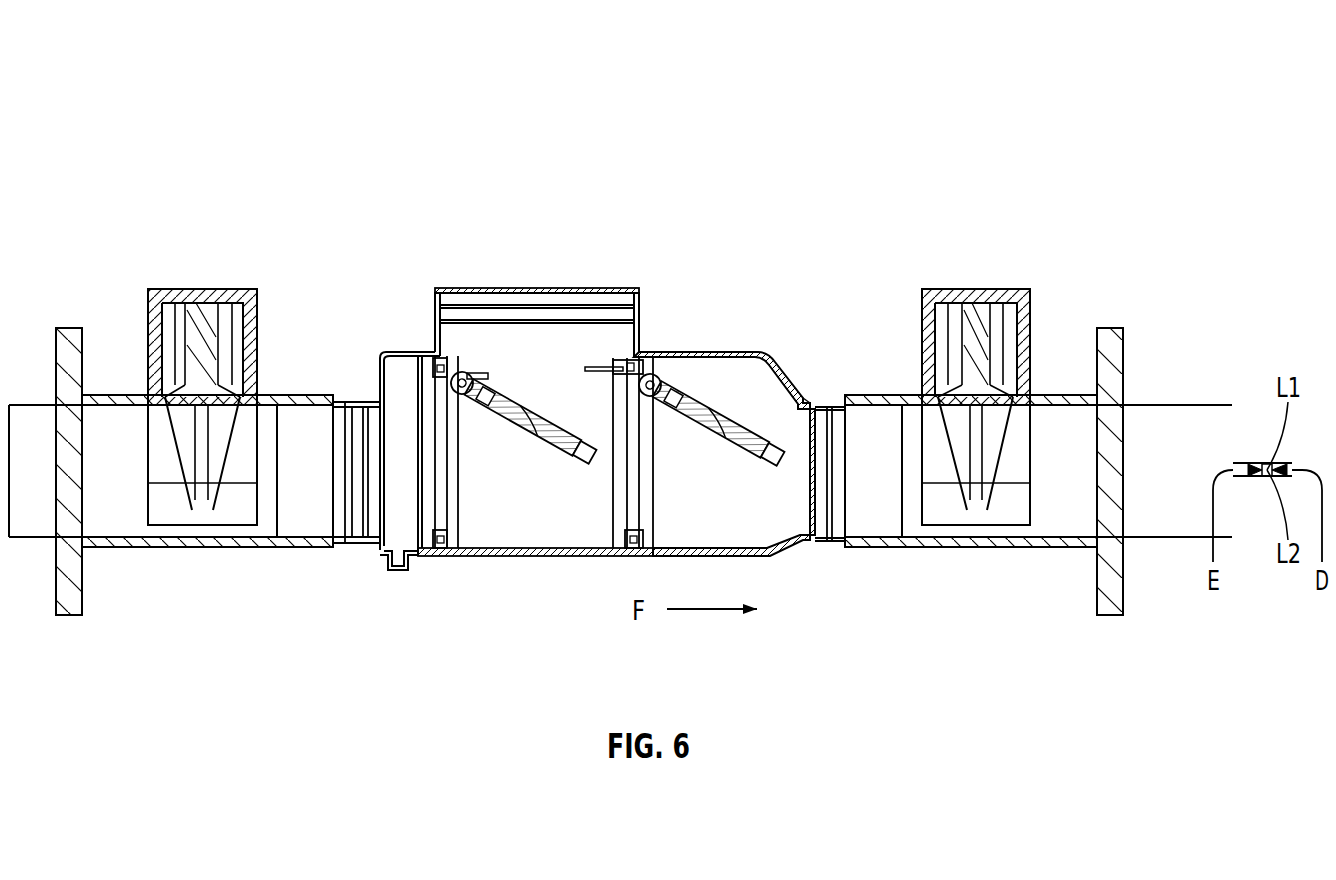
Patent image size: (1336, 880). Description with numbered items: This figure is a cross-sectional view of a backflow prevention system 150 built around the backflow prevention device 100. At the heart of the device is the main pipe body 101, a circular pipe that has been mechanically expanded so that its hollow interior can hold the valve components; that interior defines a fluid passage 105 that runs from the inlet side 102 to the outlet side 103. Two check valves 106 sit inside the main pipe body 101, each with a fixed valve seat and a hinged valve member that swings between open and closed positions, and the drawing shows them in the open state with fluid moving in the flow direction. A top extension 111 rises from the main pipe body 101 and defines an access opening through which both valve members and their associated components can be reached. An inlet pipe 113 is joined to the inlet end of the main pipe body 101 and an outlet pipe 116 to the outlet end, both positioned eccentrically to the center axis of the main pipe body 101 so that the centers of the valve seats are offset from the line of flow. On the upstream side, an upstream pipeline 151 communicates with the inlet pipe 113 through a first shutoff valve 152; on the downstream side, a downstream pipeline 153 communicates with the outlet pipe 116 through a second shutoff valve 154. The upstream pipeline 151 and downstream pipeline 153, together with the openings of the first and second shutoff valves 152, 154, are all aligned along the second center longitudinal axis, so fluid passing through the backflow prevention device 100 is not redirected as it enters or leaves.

The backflow prevention device 100 is at (669, 219).
The main pipe body 101 is at (731, 352).
The inlet side 102 is at (378, 396).
The outlet side 103 is at (805, 402).
The fluid passage 105 is at (765, 531).
The check valve 106 is at (445, 366).
The top extension 111 is at (583, 288).
The inlet pipe 113 is at (343, 542).
The outlet pipe 116 is at (828, 543).
The backflow prevention system 150 is at (209, 96).
The upstream pipeline 151 is at (107, 545).
The first shutoff valve 152 is at (212, 303).
The downstream pipeline 153 is at (1168, 405).
The second shutoff valve 154 is at (987, 290).